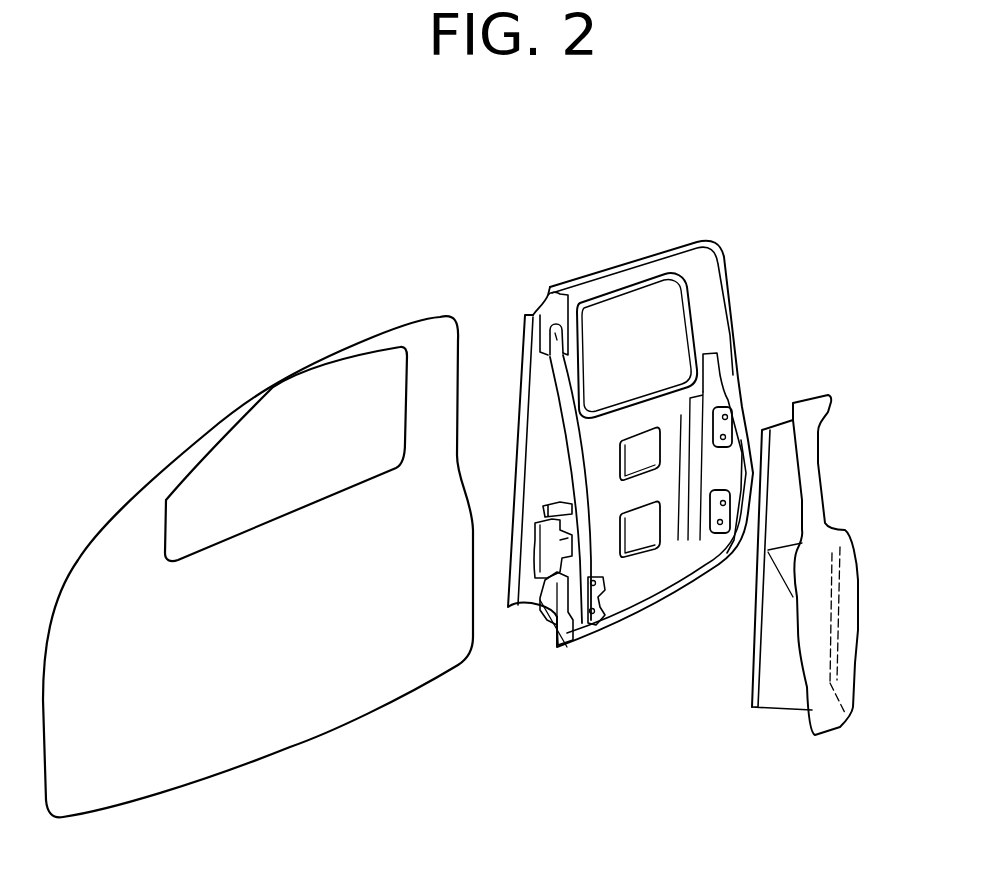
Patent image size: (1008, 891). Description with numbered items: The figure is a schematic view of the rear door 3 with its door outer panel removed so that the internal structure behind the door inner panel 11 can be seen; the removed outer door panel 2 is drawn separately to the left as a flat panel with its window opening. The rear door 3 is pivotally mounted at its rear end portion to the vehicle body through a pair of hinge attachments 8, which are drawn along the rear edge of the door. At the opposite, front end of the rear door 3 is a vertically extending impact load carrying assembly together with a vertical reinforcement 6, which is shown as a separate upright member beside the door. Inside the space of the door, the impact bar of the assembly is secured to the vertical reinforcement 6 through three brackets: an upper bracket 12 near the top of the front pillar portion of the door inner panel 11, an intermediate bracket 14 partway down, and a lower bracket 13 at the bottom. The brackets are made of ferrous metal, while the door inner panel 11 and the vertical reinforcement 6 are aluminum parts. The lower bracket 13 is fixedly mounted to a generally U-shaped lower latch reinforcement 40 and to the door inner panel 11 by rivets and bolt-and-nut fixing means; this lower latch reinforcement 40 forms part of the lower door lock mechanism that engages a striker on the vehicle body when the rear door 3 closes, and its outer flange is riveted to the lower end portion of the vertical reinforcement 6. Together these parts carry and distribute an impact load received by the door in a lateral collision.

The door outer panel 2 is at (293, 732).
The rear door 3 is at (686, 238).
The vertical reinforcement 6 is at (823, 540).
The hinge attachments 8 is at (729, 399).
The door inner panel 11 is at (532, 372).
The upper bracket 12 is at (565, 300).
The lower bracket 13 is at (560, 593).
The intermediate bracket 14 is at (543, 512).
The lower latch reinforcement 40 is at (587, 630).